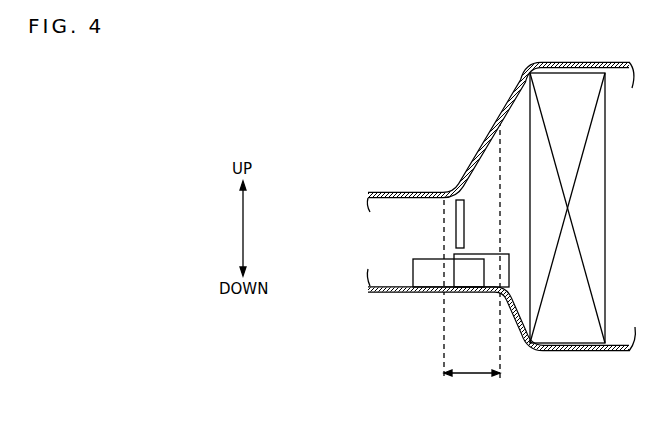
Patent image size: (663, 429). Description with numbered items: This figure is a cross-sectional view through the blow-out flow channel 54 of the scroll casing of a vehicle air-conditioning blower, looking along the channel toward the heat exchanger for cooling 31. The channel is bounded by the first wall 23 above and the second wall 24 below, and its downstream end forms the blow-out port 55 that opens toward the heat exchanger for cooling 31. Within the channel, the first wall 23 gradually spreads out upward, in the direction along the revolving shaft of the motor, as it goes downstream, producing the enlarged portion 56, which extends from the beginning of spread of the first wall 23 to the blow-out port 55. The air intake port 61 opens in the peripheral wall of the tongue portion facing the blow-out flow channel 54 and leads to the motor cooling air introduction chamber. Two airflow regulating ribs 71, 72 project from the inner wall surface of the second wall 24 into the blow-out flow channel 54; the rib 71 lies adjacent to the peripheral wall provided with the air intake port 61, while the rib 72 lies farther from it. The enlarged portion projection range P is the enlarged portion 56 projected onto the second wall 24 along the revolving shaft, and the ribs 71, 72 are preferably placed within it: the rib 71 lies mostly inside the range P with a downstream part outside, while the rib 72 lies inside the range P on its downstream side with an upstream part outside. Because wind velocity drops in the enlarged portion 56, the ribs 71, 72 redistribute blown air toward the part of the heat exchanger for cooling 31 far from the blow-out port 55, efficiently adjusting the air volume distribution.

The first wall 23 is at (415, 191).
The second wall 24 is at (373, 292).
The heat exchanger for cooling 31 is at (575, 352).
The blow-out flow channel 54 is at (404, 253).
The blow-out port 55 is at (500, 286).
The enlarged portion 56 is at (492, 200).
The air intake port 61 is at (453, 222).
The airflow regulating rib 71 is at (508, 261).
The airflow regulating rib 72 is at (412, 273).
The enlarged portion projection range P is at (472, 262).